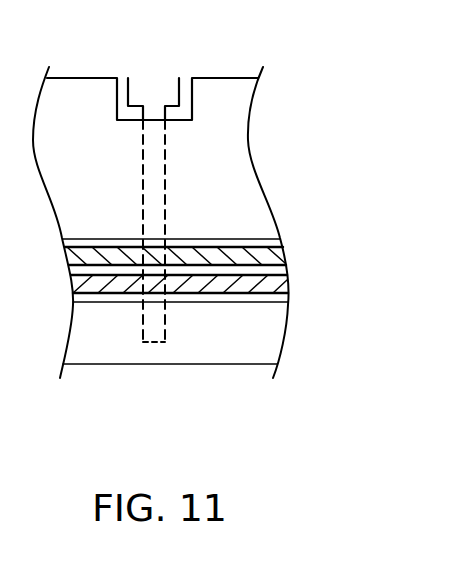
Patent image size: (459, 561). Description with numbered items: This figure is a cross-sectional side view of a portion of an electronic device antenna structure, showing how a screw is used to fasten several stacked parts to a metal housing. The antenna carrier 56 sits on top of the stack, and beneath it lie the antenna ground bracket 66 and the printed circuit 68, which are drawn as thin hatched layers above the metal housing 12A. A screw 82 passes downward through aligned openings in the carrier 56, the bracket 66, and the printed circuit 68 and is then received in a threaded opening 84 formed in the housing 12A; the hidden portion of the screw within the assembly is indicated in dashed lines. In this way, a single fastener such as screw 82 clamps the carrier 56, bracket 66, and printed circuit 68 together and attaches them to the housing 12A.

The carrier 56 is at (240, 90).
The screw 82 is at (155, 90).
The threaded opening 84 is at (131, 331).
The bracket 66 is at (278, 258).
The printed circuit 68 is at (272, 288).
The housing 12A is at (273, 342).